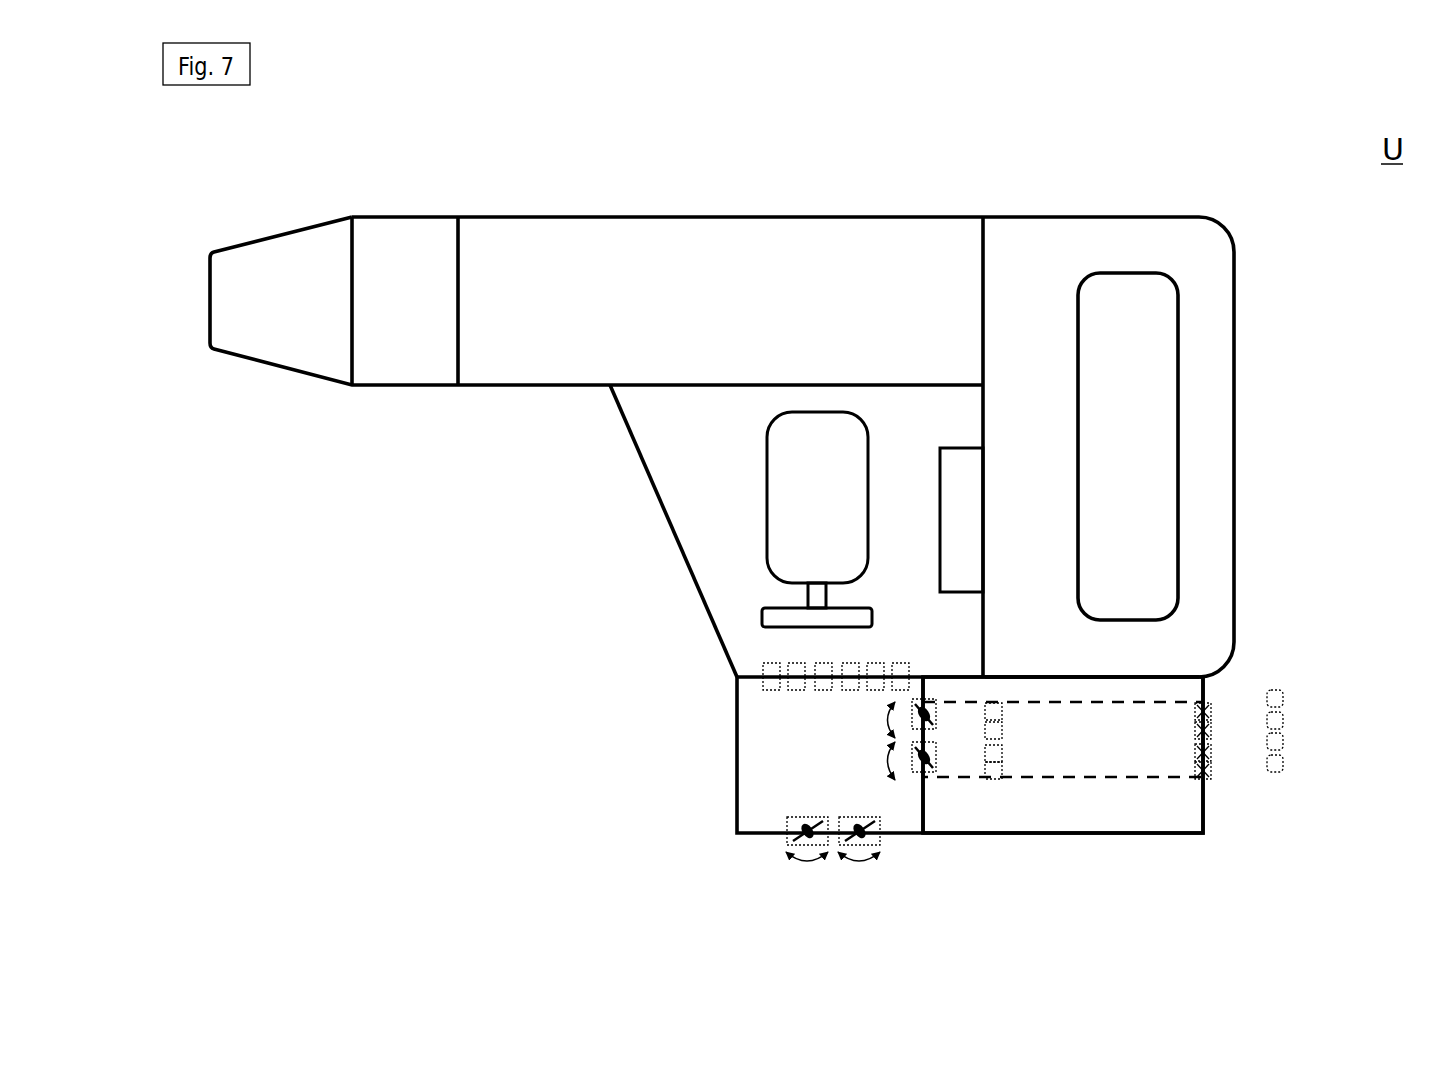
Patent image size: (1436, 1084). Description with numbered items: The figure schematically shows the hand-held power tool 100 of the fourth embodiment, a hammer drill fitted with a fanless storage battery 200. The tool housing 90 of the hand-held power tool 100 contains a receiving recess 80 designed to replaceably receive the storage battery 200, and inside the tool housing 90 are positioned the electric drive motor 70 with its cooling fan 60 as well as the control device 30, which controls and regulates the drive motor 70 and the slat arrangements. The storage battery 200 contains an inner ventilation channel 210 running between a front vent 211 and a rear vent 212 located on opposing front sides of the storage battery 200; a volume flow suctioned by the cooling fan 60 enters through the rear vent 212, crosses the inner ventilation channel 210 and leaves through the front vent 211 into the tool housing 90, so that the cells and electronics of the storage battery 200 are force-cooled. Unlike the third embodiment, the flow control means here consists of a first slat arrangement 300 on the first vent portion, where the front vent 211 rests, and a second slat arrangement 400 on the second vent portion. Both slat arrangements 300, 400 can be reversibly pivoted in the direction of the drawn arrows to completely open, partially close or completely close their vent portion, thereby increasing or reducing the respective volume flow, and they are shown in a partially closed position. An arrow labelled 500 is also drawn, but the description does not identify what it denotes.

The hand-held power tool 100 is at (1060, 159).
The control device 30 is at (970, 506).
The electric drive motor 70 is at (820, 459).
The tool housing 90 is at (736, 524).
The cooling fan 60 is at (785, 618).
The receiving recess 80 is at (1142, 675).
The storage battery 200 is at (1188, 817).
The inner ventilation channel 210 is at (1090, 750).
The front vent 211 is at (929, 742).
The rear vent 212 is at (1210, 750).
The first slat arrangement 300 is at (877, 733).
The second slat arrangement 400 is at (838, 876).
The user direction 500 is at (368, 710).